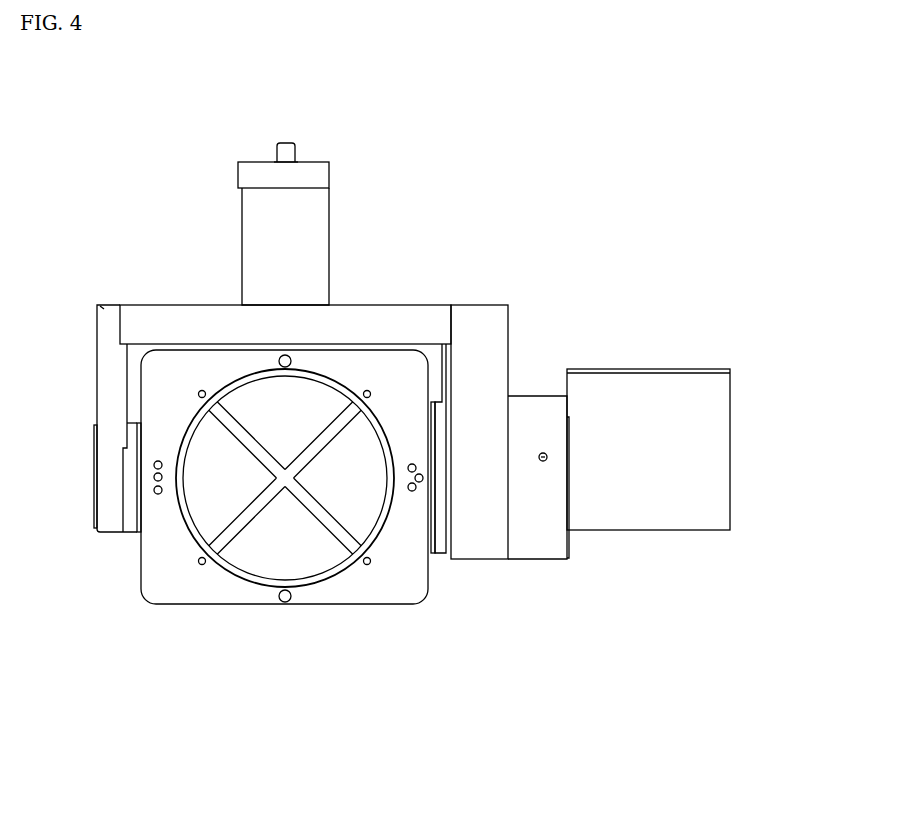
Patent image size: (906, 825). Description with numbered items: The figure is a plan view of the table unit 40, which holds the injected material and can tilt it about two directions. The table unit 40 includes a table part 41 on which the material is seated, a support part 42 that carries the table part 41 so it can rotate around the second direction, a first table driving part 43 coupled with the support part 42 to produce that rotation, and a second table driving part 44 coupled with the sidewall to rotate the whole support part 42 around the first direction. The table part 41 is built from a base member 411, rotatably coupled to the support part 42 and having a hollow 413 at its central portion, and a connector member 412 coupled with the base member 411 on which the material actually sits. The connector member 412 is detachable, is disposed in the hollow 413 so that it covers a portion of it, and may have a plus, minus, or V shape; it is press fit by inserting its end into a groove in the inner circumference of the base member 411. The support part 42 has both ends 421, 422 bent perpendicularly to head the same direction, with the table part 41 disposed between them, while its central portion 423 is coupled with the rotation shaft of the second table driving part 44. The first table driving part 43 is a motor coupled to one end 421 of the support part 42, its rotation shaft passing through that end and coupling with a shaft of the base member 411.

The table unit 40 is at (589, 181).
The table part 41 is at (266, 567).
The base member 411 is at (155, 543).
The connector member 412 is at (232, 537).
The hollow 413 is at (305, 558).
The support part 42 is at (302, 514).
The one end of support part 421 is at (500, 333).
The other end of support part 422 is at (107, 402).
The central portion of support part 423 is at (425, 309).
The first table driving part 43 is at (718, 418).
The second table driving part 44 is at (322, 236).